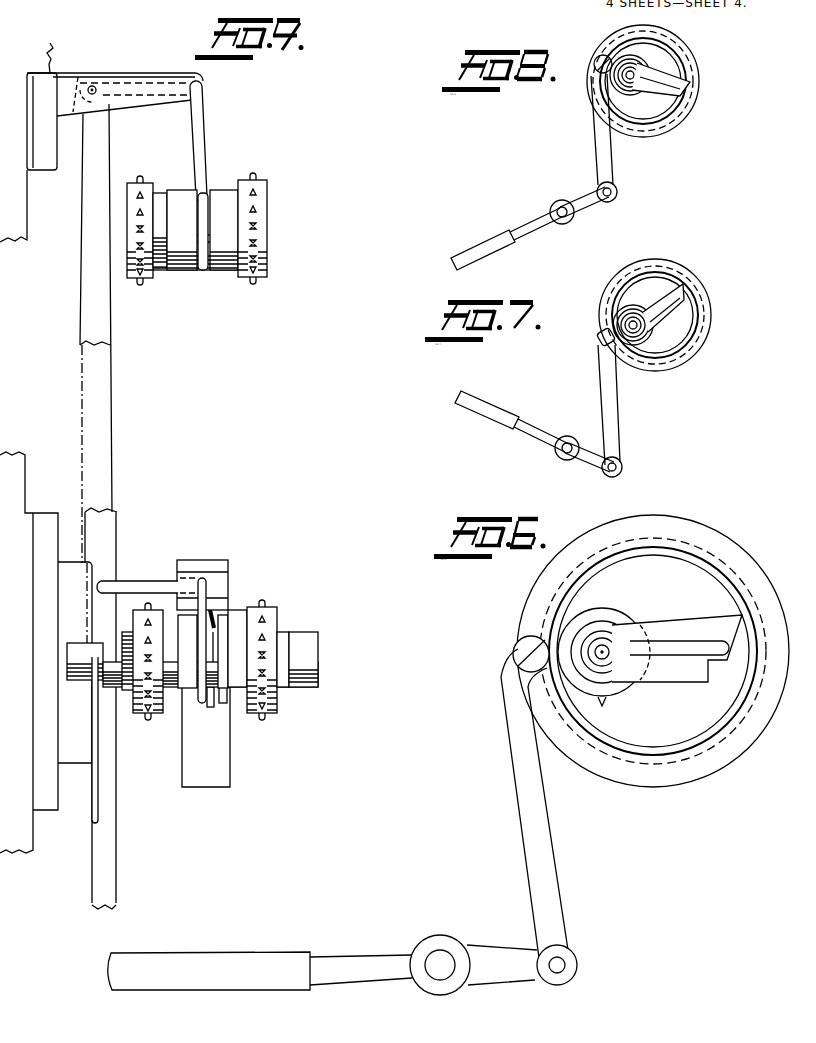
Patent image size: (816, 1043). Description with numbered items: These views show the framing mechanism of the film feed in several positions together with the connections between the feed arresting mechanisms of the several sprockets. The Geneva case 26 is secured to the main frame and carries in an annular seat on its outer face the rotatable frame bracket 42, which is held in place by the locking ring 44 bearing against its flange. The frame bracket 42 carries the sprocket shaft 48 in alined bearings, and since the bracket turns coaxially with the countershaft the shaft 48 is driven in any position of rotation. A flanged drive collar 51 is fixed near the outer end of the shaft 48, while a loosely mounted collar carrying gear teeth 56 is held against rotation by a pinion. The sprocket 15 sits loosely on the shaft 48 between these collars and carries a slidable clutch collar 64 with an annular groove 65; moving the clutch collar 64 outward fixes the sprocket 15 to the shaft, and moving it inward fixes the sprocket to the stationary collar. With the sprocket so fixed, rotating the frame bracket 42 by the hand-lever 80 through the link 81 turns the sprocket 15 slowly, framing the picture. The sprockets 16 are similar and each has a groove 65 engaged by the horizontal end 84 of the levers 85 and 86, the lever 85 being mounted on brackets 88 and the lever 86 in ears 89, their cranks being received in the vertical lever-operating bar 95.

In FIG. 9, the sprocket 15 is at (278, 610).
In FIG. 9, the sprockets 16 is at (268, 192).
In FIG. 9, the Geneva case 26 is at (52, 812).
In FIG. 9, the rotatable frame bracket 42 is at (318, 645).
In FIG. 8, the rotatable frame bracket 42 is at (665, 83).
In FIG. 7, the rotatable frame bracket 42 is at (648, 311).
In FIG. 6, the rotatable frame bracket 42 is at (682, 672).
In FIG. 8, the locking ring 44 is at (659, 133).
In FIG. 7, the locking ring 44 is at (680, 362).
In FIG. 6, the locking ring 44 is at (690, 770).
In FIG. 8, the sprocket shaft 48 is at (636, 88).
In FIG. 7, the sprocket shaft 48 is at (630, 355).
In FIG. 6, the sprocket shaft 48 is at (608, 662).
In FIG. 9, the flanged drive collar 51 is at (280, 688).
In FIG. 9, the gear teeth 56 is at (127, 693).
In FIG. 9, the clutch collar 64 is at (202, 703).
In FIG. 9, the annular groove 65 is at (206, 268).
In FIG. 8, the hand-lever 80 is at (492, 240).
In FIG. 7, the hand-lever 80 is at (496, 420).
In FIG. 6, the hand-lever 80 is at (285, 967).
In FIG. 9, the link 81 is at (98, 810).
In FIG. 8, the link 81 is at (597, 156).
In FIG. 7, the link 81 is at (613, 413).
In FIG. 6, the link 81 is at (542, 852).
In FIG. 9, the horizontal end 84 is at (207, 200).
In FIG. 9, the lever 85 is at (208, 148).
In FIG. 9, the lever 86 is at (143, 580).
In FIG. 9, the brackets 88 is at (115, 104).
In FIG. 9, the ears 89 is at (232, 577).
In FIG. 9, the lever-operating bar 95 is at (112, 333).